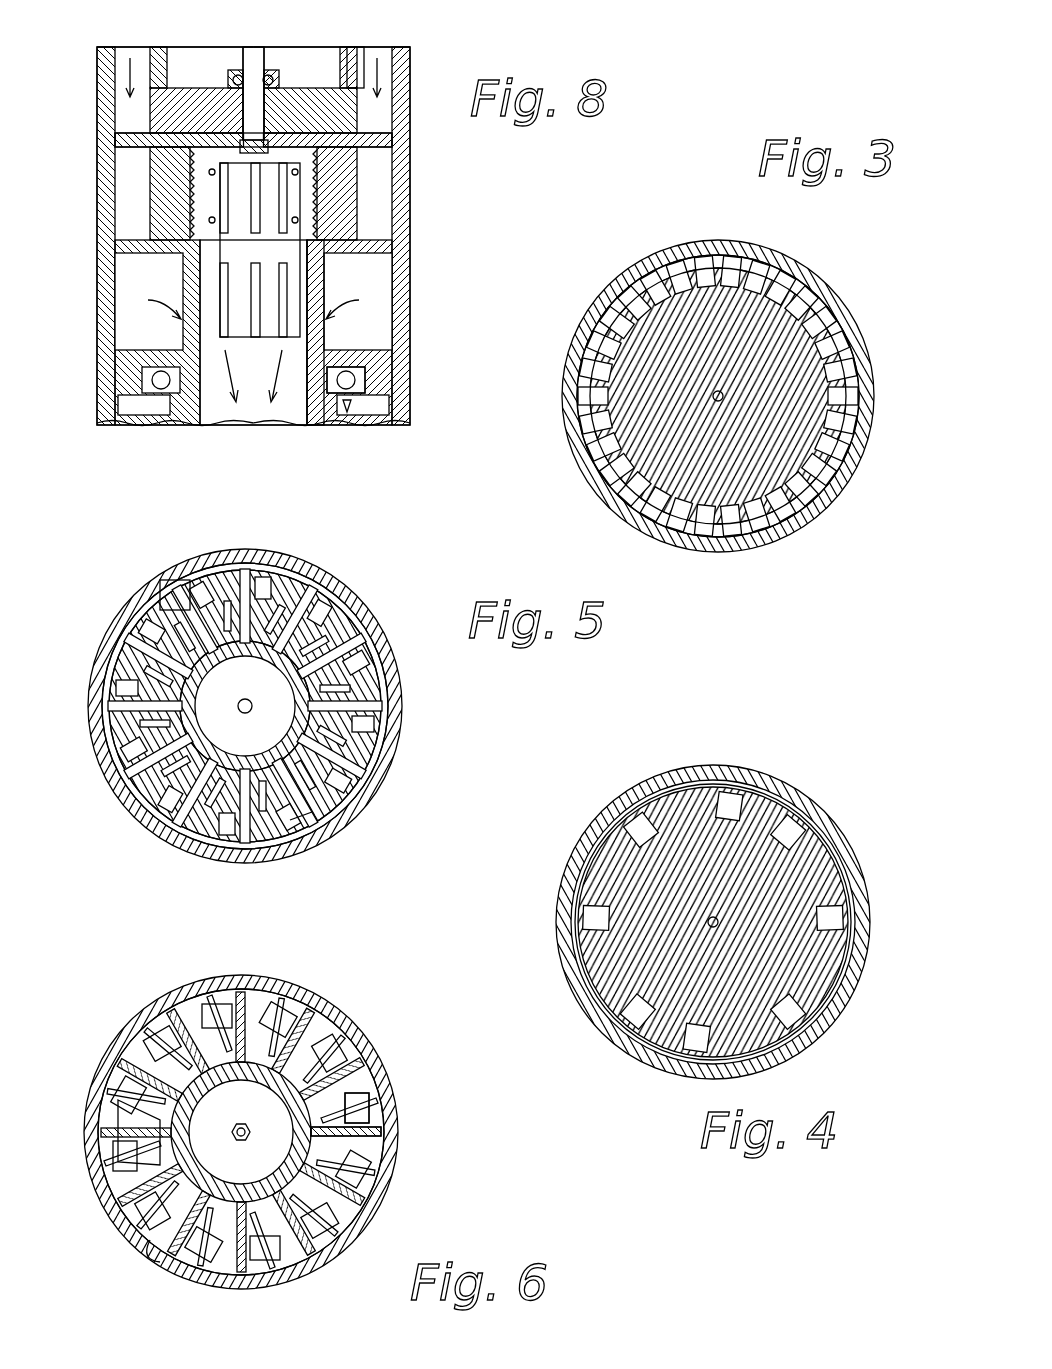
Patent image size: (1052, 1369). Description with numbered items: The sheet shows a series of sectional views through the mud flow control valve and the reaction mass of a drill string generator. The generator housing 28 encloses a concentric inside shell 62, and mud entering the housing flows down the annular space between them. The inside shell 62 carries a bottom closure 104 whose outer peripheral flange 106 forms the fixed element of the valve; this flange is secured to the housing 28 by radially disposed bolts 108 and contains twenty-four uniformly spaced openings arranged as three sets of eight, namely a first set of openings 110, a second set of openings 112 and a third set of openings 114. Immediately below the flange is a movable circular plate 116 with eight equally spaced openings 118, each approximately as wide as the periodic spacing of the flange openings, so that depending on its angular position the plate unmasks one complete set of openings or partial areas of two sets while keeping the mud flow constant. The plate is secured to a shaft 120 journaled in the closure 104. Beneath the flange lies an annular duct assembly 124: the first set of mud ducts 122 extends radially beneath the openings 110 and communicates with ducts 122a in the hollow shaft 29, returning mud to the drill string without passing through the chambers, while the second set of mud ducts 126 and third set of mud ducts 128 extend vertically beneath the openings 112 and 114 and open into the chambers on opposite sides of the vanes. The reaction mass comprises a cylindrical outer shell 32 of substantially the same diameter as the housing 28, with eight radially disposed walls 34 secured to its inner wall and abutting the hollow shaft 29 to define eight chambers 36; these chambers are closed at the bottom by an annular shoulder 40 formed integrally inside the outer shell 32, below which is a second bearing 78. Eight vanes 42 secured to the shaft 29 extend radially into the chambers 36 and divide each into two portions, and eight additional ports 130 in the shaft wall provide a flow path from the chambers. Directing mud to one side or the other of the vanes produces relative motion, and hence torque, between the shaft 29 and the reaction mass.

In FIG. 8, the housing 28 is at (410, 176).
In FIG. 3, the housing 28 is at (862, 342).
In FIG. 4, the housing 28 is at (568, 950).
In FIG. 5, the housing 28 is at (400, 762).
In FIG. 5, the hollow shaft 29 is at (370, 658).
In FIG. 6, the hollow shaft 29 is at (300, 1010).
In FIG. 8, the outer shell 32 is at (410, 287).
In FIG. 6, the outer shell 32 is at (400, 1136).
In FIG. 6, the radially disposed walls 34 is at (330, 1000).
In FIG. 6, the chambers 36 is at (120, 1140).
In FIG. 8, the annular shoulder 40 is at (410, 360).
In FIG. 6, the vanes 42 is at (165, 1250).
In FIG. 8, the inside shell 62 is at (360, 67).
In FIG. 8, the second bearing 78 is at (347, 425).
In FIG. 3, the bottom closure 104 is at (632, 522).
In FIG. 3, the outer peripheral flange 106 is at (592, 455).
In FIG. 3, the bolts 108 is at (585, 422).
In FIG. 3, the first set of openings 110 is at (718, 245).
In FIG. 3, the second set of openings 112 is at (665, 268).
In FIG. 3, the third set of openings 114 is at (668, 250).
In FIG. 8, the movable circular plate 116 is at (160, 135).
In FIG. 4, the movable circular plate 116 is at (760, 820).
In FIG. 4, the openings 118 is at (650, 800).
In FIG. 5, the openings 118 is at (225, 600).
In FIG. 8, the shaft 120 is at (266, 78).
In FIG. 3, the shaft 120 is at (718, 396).
In FIG. 4, the shaft 120 is at (713, 922).
In FIG. 5, the first set of mud ducts 122 is at (320, 632).
In FIG. 8, the ducts 122a is at (262, 238).
In FIG. 5, the ducts 122a is at (266, 700).
In FIG. 5, the annular duct assembly 124 is at (300, 830).
In FIG. 5, the second set of mud ducts 126 is at (305, 590).
In FIG. 6, the second set of mud ducts 126 is at (270, 990).
In FIG. 5, the third set of mud ducts 128 is at (275, 600).
In FIG. 6, the third set of mud ducts 128 is at (245, 1000).
In FIG. 8, the ports 130 is at (278, 322).
In FIG. 6, the ports 130 is at (252, 1122).